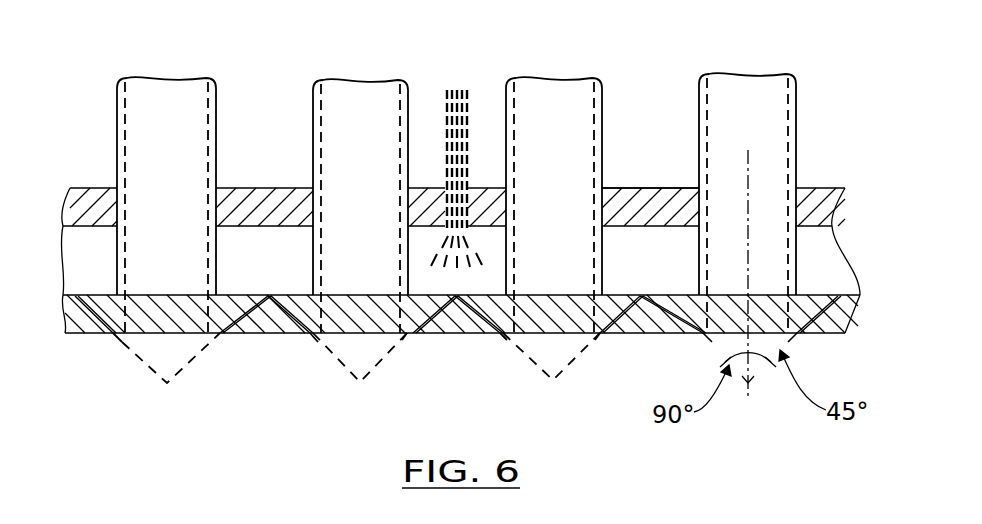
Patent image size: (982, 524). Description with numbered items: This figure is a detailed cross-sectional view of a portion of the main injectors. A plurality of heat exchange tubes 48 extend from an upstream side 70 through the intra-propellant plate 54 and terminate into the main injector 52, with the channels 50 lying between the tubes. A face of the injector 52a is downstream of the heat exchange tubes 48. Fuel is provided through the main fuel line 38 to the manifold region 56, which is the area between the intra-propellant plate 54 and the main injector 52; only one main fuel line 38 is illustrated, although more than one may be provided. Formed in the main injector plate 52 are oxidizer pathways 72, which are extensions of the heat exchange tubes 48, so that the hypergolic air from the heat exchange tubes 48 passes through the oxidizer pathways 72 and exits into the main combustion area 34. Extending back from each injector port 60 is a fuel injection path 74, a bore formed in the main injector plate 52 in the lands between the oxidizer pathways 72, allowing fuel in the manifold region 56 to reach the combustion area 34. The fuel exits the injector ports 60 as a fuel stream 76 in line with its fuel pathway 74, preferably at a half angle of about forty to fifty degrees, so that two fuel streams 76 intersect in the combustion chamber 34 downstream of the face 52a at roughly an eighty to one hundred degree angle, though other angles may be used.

The heat exchange tubes 48 is at (178, 114).
The channels 50 is at (286, 114).
The main fuel line 38 is at (470, 118).
The upstream side 70 is at (653, 172).
The intra-propellant plate 54 is at (818, 196).
The manifold region 56 is at (820, 249).
The main injector 52 is at (856, 308).
The face of the injector 52a is at (838, 332).
The oxidizer pathways 72 is at (155, 325).
The injector port 60 is at (225, 338).
The fuel pathway 74 is at (298, 306).
The fuel stream 76 is at (395, 347).
The main combustion area 34 is at (278, 438).